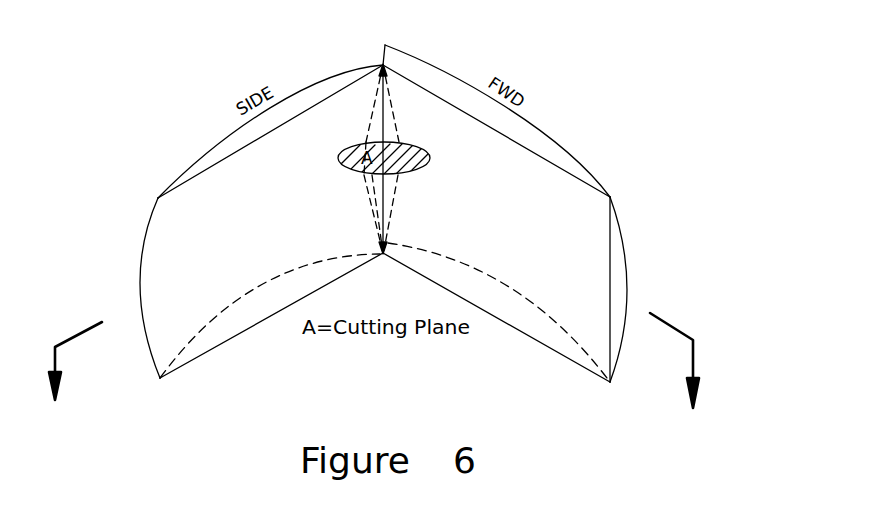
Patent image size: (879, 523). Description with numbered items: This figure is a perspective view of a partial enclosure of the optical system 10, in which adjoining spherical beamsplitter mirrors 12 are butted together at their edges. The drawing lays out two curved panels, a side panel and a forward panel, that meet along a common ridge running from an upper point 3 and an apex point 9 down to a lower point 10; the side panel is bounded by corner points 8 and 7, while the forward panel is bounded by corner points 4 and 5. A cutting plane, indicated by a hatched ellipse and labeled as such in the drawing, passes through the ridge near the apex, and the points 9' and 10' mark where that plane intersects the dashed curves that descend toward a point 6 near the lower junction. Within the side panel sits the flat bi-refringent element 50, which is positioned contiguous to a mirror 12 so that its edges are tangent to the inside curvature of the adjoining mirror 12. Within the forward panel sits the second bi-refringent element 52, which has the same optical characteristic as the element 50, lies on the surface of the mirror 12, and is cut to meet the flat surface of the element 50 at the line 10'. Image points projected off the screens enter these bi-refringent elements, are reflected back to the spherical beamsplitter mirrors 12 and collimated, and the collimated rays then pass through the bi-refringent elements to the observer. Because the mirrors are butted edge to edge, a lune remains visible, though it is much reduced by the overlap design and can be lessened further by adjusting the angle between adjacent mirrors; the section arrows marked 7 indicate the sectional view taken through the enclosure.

The top vertex point 3 is at (394, 44).
The forward upper corner point 4 is at (620, 185).
The forward lower corner point 5 is at (619, 395).
The intersection point 6 is at (396, 212).
The side lower corner point / section line 7- 7 is at (374, 375).
The side upper corner point 8 is at (149, 186).
The apex point 9 is at (391, 63).
The system 10 is at (382, 143).
The mirror 12 is at (190, 157).
The bi-refringent element 50 is at (268, 246).
The second bi-refringent element 52 is at (506, 243).
The cutting plane section point 9' is at (387, 150).
The line 10' is at (354, 145).